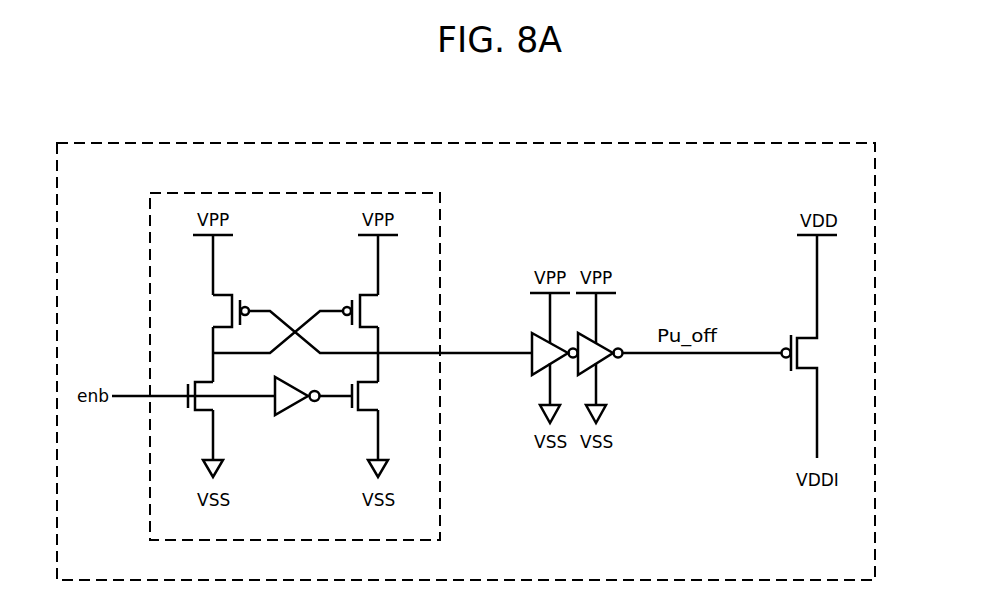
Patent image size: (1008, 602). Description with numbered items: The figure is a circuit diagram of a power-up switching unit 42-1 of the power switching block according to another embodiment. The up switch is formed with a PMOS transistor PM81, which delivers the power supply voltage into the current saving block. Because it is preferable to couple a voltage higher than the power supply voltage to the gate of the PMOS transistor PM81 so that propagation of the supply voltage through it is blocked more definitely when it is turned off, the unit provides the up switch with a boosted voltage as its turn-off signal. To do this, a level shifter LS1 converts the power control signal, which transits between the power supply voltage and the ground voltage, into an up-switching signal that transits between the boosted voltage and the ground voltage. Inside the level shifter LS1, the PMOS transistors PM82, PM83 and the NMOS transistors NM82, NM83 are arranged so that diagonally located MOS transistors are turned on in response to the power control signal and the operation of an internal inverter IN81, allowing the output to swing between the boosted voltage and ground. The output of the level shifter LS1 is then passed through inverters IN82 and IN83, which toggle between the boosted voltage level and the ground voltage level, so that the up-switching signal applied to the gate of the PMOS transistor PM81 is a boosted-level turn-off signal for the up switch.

The power-up switching unit 42-1 is at (738, 143).
The level shifter LS1 is at (365, 195).
The PMOS transistor PM81 is at (823, 346).
The PMOS transistor PM82 is at (207, 311).
The PMOS transistor PM83 is at (386, 311).
The NMOS transistor NM82 is at (186, 411).
The NMOS transistor NM83 is at (375, 396).
The internal inverter IN81 is at (297, 409).
The inverter IN82 is at (540, 358).
The inverter IN83 is at (678, 358).